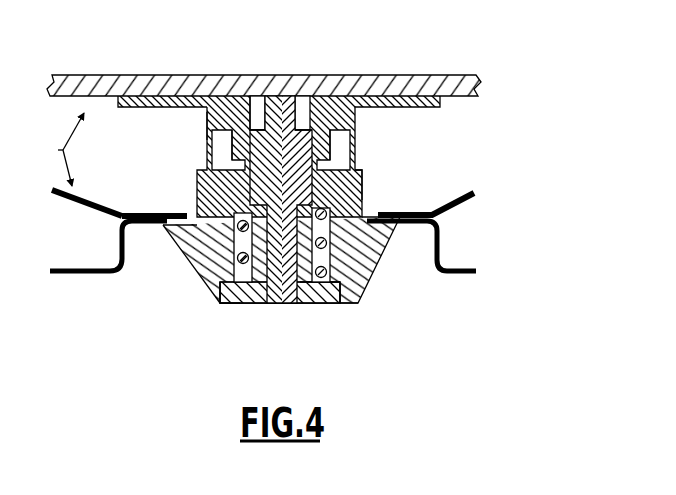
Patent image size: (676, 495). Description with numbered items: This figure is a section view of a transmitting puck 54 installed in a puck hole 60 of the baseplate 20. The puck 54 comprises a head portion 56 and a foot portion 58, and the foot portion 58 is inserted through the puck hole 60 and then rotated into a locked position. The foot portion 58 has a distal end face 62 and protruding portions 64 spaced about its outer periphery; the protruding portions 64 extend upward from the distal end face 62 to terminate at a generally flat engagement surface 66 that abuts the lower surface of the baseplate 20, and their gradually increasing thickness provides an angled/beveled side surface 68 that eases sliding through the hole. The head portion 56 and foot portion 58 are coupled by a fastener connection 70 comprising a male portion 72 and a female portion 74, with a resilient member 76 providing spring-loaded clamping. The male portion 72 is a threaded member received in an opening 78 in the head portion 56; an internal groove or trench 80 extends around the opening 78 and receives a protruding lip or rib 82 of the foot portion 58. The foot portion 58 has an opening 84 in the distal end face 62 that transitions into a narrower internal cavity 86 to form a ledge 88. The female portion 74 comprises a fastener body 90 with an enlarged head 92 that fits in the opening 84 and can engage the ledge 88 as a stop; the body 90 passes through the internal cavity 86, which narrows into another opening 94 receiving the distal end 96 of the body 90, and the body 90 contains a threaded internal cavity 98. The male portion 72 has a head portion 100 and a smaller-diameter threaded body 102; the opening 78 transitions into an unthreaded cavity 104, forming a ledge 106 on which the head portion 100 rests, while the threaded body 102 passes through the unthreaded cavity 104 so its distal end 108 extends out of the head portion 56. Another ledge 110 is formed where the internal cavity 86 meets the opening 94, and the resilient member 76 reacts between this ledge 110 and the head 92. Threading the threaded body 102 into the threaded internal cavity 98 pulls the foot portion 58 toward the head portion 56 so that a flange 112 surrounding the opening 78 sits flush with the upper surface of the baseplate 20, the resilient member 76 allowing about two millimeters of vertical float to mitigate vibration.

The baseplate 20 is at (60, 149).
The puck 54 is at (150, 166).
The head portion 56 is at (362, 98).
The foot portion 58 is at (206, 300).
The puck hole 60 is at (375, 210).
The distal end face 62 is at (233, 306).
The protruding portions 64 is at (124, 231).
The engagement surface 66 is at (170, 210).
The angled/beveled side surface 68 is at (165, 268).
The fastener connection 70 is at (318, 310).
The male portion 72 is at (278, 108).
The female portion 74 is at (259, 300).
The resilient member 76 is at (362, 262).
The opening 78 is at (237, 102).
The internal groove or trench 80 is at (355, 138).
The protruding lip or rib 82 is at (333, 148).
The opening 84 is at (362, 305).
The internal cavity 86 is at (358, 290).
The ledge 88 is at (192, 288).
The fastener body 90 is at (356, 182).
The enlarged head 92 is at (285, 235).
The opening 94 is at (205, 188).
The distal end 96 is at (214, 153).
The threaded internal cavity 98 is at (177, 261).
The head portion 100 is at (300, 102).
The threaded body 102 is at (242, 100).
The unthreaded cavity 104 is at (308, 102).
The ledge 106 is at (207, 124).
The distal end 108 is at (300, 210).
The ledge 110 is at (398, 245).
The flange 112 is at (410, 105).